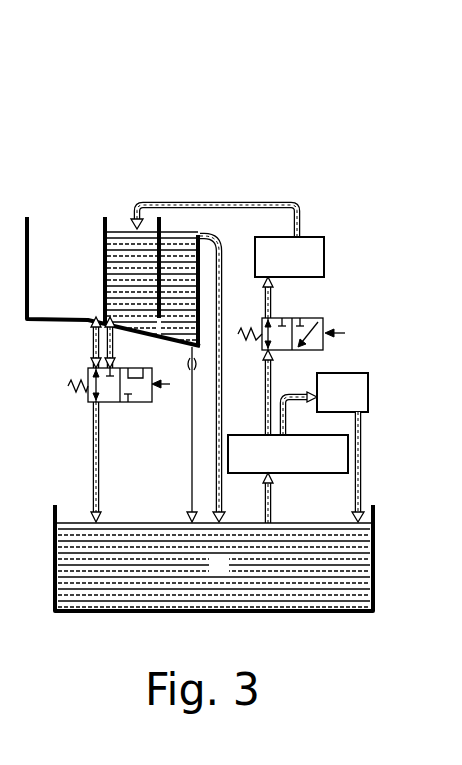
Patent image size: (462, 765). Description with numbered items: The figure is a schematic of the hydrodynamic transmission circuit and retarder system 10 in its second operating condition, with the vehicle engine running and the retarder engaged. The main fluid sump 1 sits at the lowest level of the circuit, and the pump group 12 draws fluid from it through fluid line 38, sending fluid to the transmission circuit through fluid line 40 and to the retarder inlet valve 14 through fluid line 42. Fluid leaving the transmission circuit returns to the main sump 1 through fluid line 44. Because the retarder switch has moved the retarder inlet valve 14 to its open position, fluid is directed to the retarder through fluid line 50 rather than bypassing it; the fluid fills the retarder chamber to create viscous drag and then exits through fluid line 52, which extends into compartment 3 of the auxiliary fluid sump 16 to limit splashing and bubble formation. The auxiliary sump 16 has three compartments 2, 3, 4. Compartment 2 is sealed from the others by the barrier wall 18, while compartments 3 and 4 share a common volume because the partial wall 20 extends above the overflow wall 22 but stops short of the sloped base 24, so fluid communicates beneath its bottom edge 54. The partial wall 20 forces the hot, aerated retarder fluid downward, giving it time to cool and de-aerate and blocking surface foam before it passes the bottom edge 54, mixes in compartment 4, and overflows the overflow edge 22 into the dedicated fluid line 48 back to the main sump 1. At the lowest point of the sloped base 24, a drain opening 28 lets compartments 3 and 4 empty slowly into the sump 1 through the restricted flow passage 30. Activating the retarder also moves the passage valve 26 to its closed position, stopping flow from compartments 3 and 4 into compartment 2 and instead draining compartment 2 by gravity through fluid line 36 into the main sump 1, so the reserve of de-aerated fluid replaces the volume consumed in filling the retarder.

The main fluid sump 1 is at (214, 558).
The compartment 2 is at (79, 278).
The compartment 3 is at (132, 286).
The compartment 4 is at (178, 289).
The transmission circuit and retarder system 10 is at (159, 127).
The pump group 12 is at (350, 468).
The retarder inlet valve 14 is at (333, 315).
The auxiliary fluid sump 16 is at (83, 185).
The barrier wall 18 is at (105, 215).
The partial wall 20 is at (160, 215).
The overflow wall 22 is at (205, 237).
The sloped base 24 is at (92, 345).
The passage valve 26 is at (87, 401).
The drain opening 28 is at (195, 349).
The restricted flow passage 30 is at (189, 472).
The fluid line 36 is at (93, 448).
The fluid line 38 is at (272, 500).
The fluid line 40 is at (299, 394).
The fluid line 42 is at (264, 396).
The fluid line 44 is at (362, 458).
The fluid line 48 is at (222, 363).
The fluid line 50 is at (272, 290).
The fluid line 52 is at (241, 203).
The bottom edge 54 is at (158, 322).